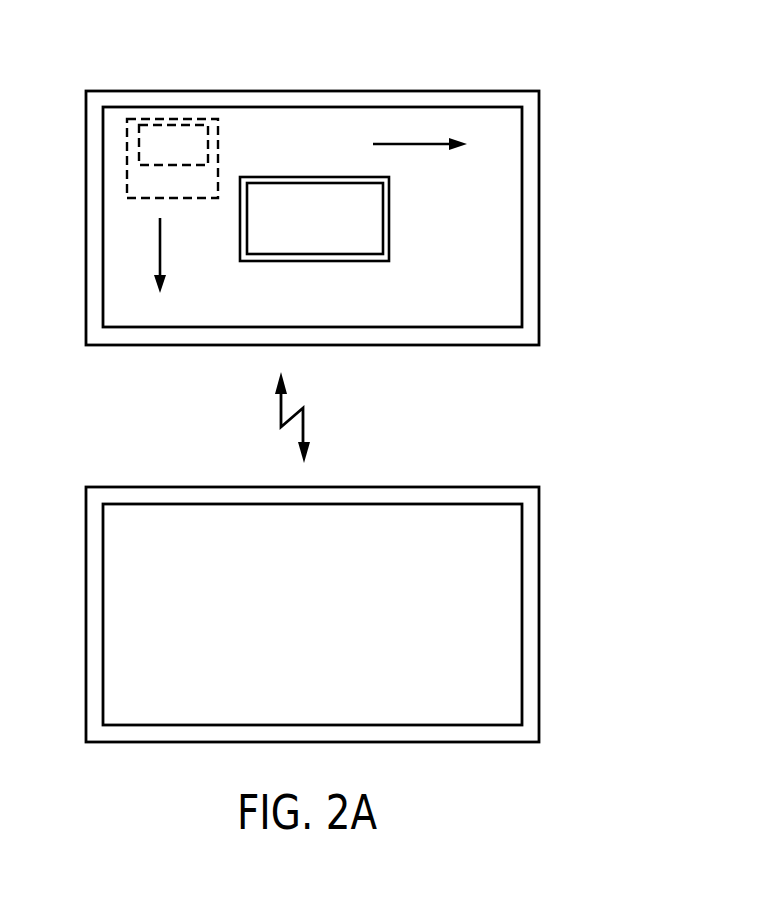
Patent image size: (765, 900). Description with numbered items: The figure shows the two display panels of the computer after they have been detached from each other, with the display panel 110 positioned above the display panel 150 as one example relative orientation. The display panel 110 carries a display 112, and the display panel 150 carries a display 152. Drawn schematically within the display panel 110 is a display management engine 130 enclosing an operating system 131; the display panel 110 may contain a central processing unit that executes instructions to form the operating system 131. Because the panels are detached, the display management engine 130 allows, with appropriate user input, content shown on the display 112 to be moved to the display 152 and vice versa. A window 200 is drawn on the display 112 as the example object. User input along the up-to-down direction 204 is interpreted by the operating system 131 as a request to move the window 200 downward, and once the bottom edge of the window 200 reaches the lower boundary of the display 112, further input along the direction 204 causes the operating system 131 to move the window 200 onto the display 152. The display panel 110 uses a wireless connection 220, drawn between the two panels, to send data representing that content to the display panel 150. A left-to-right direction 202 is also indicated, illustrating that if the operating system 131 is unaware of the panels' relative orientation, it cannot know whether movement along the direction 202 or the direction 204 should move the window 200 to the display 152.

The display panel 110 is at (540, 216).
The display 112 is at (500, 282).
The display management engine 130 is at (174, 127).
The operating system 131 is at (128, 158).
The window 200 is at (314, 262).
The left-to-right direction 202 is at (413, 145).
The up-to-down direction 204 is at (160, 237).
The wireless connection 220 is at (305, 417).
The display panel 150 is at (541, 612).
The display 152 is at (500, 678).